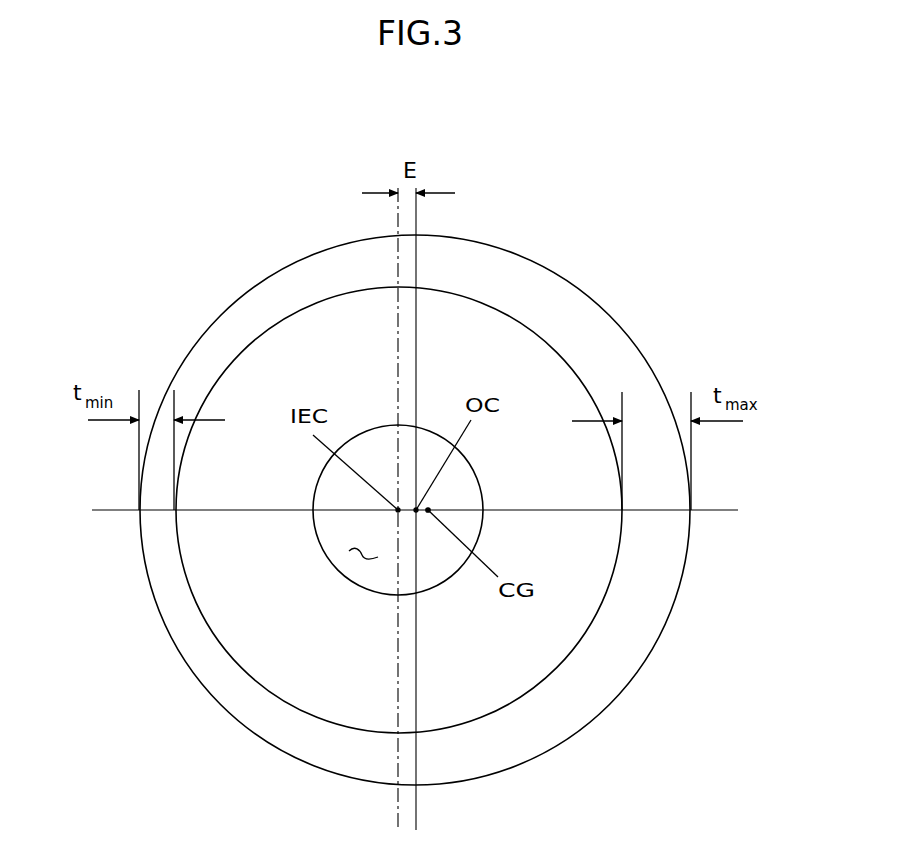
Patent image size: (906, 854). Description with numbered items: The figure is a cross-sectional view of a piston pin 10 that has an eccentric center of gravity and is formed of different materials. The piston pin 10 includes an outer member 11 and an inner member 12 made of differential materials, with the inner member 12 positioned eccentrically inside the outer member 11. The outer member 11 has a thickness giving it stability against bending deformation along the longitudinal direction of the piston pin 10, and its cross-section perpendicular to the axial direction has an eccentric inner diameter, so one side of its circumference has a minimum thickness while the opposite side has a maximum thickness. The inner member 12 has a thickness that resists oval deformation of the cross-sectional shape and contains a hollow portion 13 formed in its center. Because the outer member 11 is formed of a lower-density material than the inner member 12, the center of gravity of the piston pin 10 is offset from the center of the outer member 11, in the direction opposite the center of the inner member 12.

The piston pin 10 is at (581, 150).
The outer member 11 is at (587, 320).
The inner member 12 is at (233, 610).
The hollow portion 13 is at (361, 557).